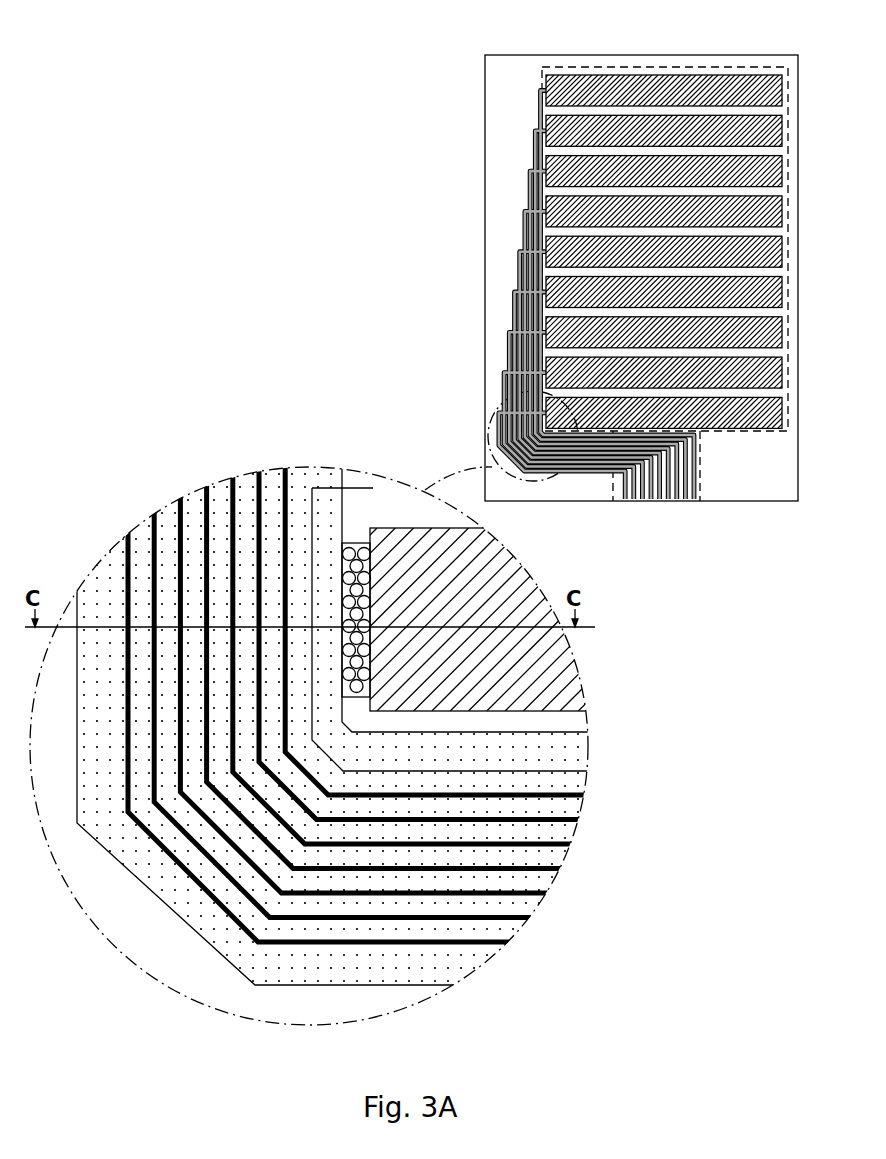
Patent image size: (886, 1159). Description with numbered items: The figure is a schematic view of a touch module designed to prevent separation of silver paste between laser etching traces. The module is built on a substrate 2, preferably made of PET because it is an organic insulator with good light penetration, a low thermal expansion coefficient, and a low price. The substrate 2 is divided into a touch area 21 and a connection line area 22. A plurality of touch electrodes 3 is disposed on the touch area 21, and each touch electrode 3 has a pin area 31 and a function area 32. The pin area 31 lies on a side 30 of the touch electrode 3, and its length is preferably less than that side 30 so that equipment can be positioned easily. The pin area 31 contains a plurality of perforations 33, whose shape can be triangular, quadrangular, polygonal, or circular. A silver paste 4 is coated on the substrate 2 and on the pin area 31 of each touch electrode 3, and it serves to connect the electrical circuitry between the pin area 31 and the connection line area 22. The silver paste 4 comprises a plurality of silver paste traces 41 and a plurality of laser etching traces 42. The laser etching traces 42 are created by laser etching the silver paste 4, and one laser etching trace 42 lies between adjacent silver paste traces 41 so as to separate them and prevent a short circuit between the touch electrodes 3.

The substrate 2 is at (494, 73).
The touch area 21 is at (668, 67).
The connection line area 22 is at (688, 494).
The touch electrode 3 is at (772, 92).
The silver paste 4 is at (507, 330).
The silver paste trace 41 is at (573, 758).
The laser etching trace 42 is at (565, 773).
The side 30 is at (370, 706).
The pin area 31 is at (343, 545).
The function area 32 is at (490, 566).
The perforations 33 is at (353, 554).